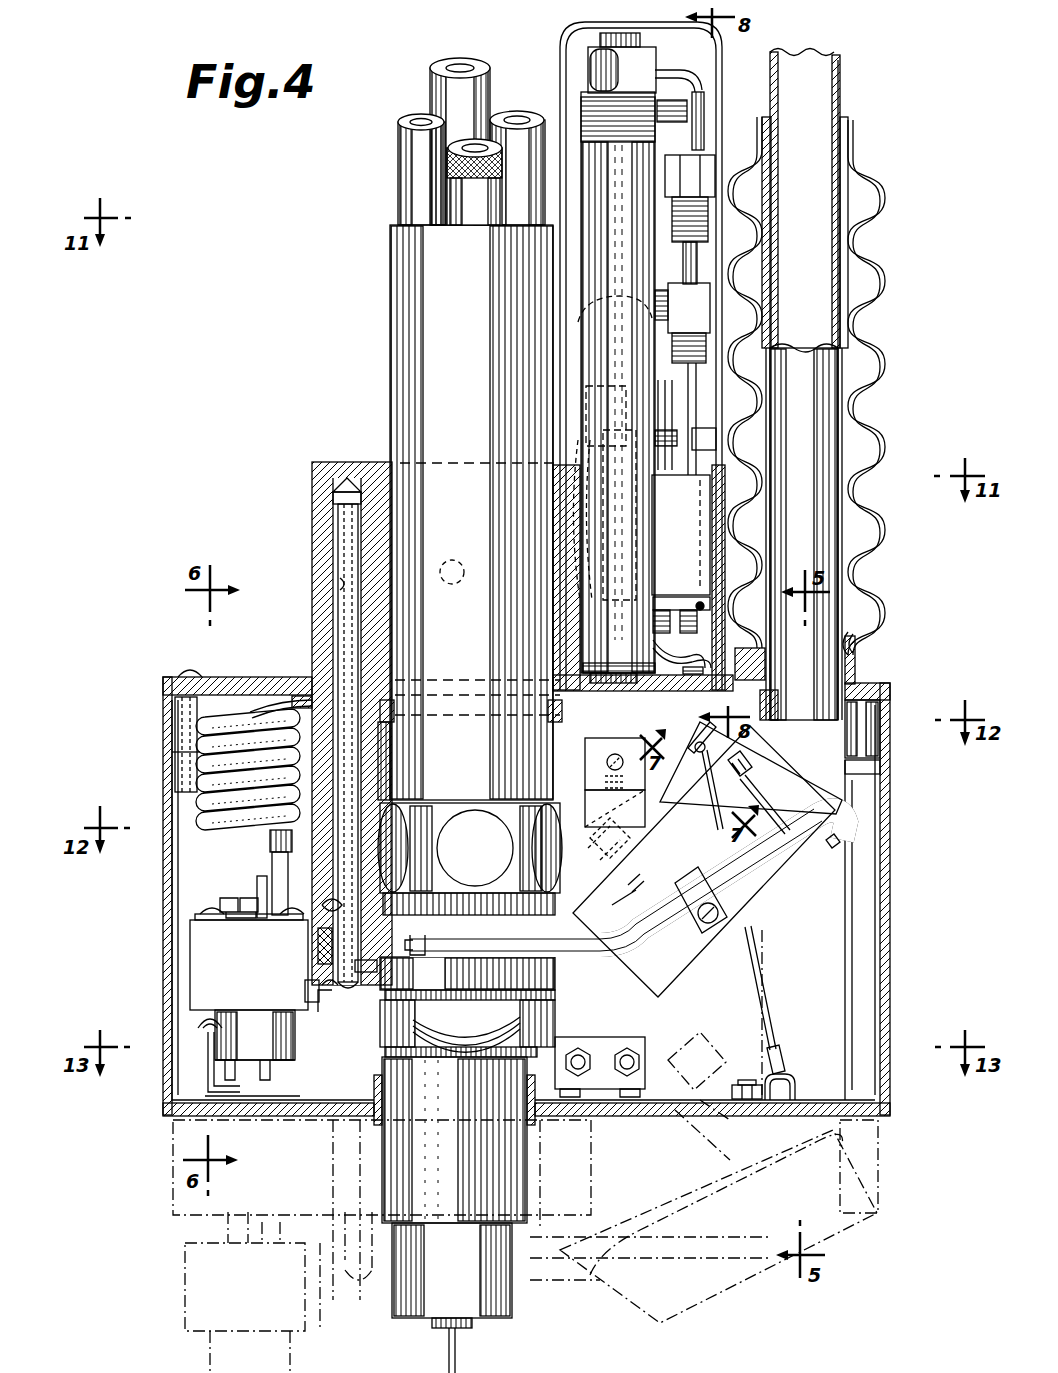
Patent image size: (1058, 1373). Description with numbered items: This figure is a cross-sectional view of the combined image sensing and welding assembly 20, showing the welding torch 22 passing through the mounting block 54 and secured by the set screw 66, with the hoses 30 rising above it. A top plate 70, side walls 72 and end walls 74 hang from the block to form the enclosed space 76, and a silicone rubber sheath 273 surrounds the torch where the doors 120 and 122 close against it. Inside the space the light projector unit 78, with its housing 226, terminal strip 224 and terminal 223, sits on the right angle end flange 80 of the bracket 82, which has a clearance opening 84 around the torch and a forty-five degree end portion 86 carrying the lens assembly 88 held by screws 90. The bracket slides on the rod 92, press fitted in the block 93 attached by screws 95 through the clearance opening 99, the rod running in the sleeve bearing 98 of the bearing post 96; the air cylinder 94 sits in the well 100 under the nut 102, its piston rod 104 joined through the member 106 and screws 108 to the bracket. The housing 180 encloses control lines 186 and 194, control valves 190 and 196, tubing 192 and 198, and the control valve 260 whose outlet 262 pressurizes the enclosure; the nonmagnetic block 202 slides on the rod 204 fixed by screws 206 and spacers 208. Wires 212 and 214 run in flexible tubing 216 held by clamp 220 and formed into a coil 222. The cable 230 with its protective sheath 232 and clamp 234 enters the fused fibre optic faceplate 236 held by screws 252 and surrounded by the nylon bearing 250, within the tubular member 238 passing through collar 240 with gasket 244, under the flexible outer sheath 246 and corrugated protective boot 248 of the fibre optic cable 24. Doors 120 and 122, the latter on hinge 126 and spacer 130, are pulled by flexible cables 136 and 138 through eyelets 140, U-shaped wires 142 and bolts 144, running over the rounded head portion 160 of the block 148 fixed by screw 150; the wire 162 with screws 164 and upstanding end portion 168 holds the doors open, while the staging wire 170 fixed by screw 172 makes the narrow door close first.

The combined image sensing and welding assembly 20 is at (272, 364).
The welding torch 22 is at (515, 1305).
The fibre optic cable 24 is at (830, 57).
The hoses 30 is at (470, 148).
The mounting block 54 is at (318, 480).
The set screw 66 is at (462, 562).
The top plate 70 is at (240, 677).
The side walls 72 is at (845, 968).
The end walls 74 is at (172, 882).
The enclosed space 76 is at (730, 1003).
The light projector unit 78 is at (185, 975).
The right angle end flange 80 is at (318, 1012).
The bracket 82 is at (473, 957).
The clearance opening 84 is at (375, 915).
The 45 degree end portion 86 is at (662, 832).
The lens assembly 88 is at (775, 897).
The screws 90 is at (758, 798).
The rod 92 is at (348, 541).
The block 93 is at (318, 942).
The air cylinder 94 is at (587, 150).
The screws 95 is at (366, 968).
The bearing post 96 is at (382, 775).
The sleeve bearing 98 is at (342, 580).
The clearance opening 99 is at (333, 900).
The well 100 is at (580, 505).
The nut 102 is at (560, 680).
The piston rod 104 is at (588, 750).
The member 106 is at (592, 793).
The screws 108 is at (628, 880).
The door 120 is at (862, 1118).
The door 122 is at (862, 1100).
The hinge 126 is at (640, 1070).
The spacer 130 is at (632, 1037).
The flexible cable 136 is at (762, 988).
The flexible cable 138 is at (720, 832).
The eyelet 140 is at (784, 1052).
The U-shaped wire 142 is at (781, 1075).
The bolt 144 is at (748, 1082).
The block 148 is at (752, 756).
The screw 150 is at (656, 792).
The rounded head portion 160 is at (745, 762).
The wire 162 is at (318, 962).
The screws 164 is at (330, 990).
The upstanding end portion 168 is at (270, 842).
The staging wire 170 is at (215, 1096).
The screw 172 is at (200, 1022).
The housing 180 is at (562, 74).
The control line 186 is at (683, 262).
The control valve 190 is at (712, 170).
The tubing 192 is at (705, 104).
The control line 194 is at (704, 604).
The control valve 196 is at (678, 300).
The tubing 198 is at (634, 312).
The nonmagnetic block 202 is at (745, 515).
The rod 204 is at (681, 535).
The screws 206 is at (703, 78).
The spacers 208 is at (658, 112).
The wires 212 is at (619, 662).
The wires 214 is at (711, 664).
The flexible tubing 216 is at (300, 696).
The clamp 220 is at (394, 712).
The coil 222 is at (200, 762).
The terminal 223 is at (220, 906).
The terminal strip 224 is at (262, 880).
The light projector housing 226 is at (195, 926).
The cable 230 is at (412, 930).
The protective sheath 232 is at (590, 956).
The clamp 234 is at (735, 905).
The fused fibre optic faceplate 236 is at (852, 776).
The tubular member 238 is at (836, 593).
The collar 240 is at (856, 656).
The gasket 244 is at (850, 634).
The flexible outer sheath 246 is at (841, 108).
The corrugated protective boot 248 is at (872, 340).
The nylon bearing 250 is at (884, 702).
The screws 252 is at (838, 845).
The control valve 260 is at (627, 388).
The outlet 262 is at (578, 506).
The silicone rubber sheath 273 is at (530, 1118).